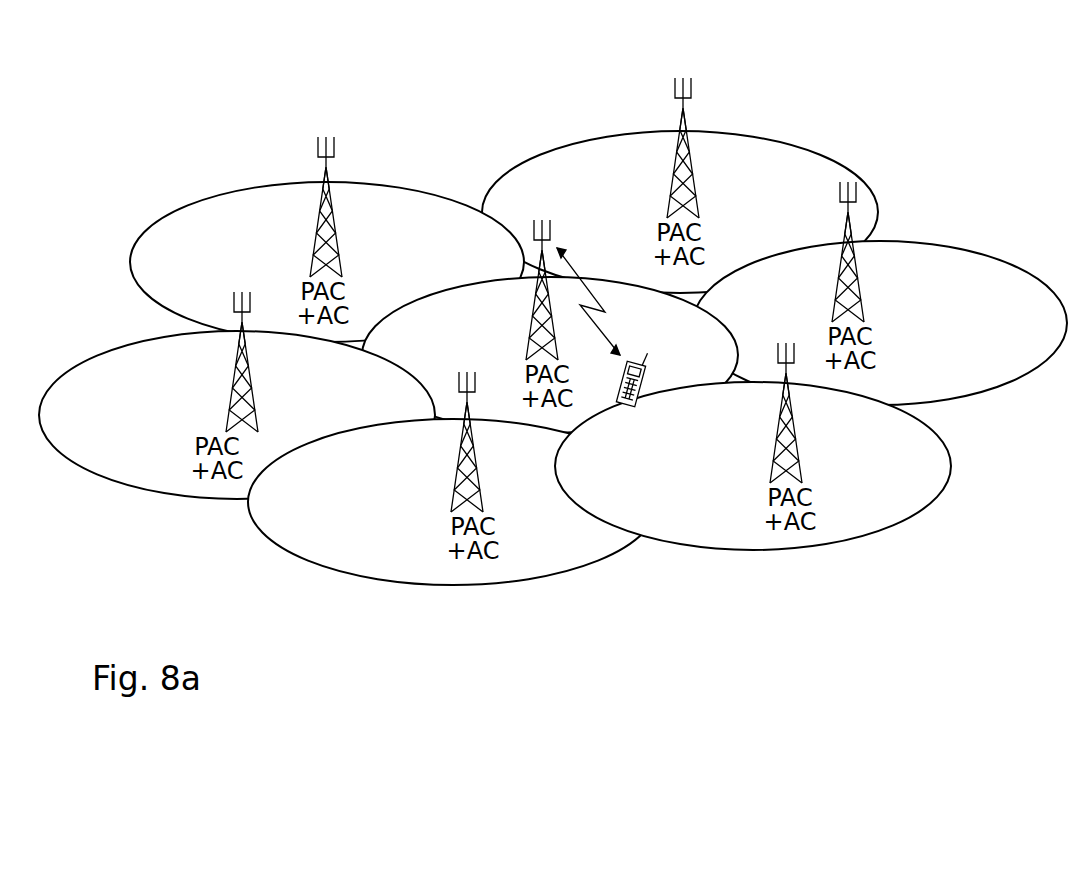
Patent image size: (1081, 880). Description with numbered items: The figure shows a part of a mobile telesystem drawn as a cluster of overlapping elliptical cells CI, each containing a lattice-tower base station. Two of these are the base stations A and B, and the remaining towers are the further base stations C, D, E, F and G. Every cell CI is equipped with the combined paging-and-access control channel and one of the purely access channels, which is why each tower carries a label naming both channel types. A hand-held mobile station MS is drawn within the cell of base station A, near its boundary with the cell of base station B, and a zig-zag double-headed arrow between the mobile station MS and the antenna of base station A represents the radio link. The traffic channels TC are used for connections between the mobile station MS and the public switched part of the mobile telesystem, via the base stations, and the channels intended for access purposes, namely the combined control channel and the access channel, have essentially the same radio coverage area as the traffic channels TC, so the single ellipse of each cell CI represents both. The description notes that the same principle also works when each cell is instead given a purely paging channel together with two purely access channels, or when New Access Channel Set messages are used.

The traffic channel TC is at (576, 266).
The mobile station MS is at (630, 405).
The cell CI is at (853, 503).
The base station A is at (550, 355).
The base station B is at (753, 481).
The base station C is at (880, 323).
The base station D is at (680, 176).
The base station E is at (327, 262).
The base station F is at (237, 415).
The base station G is at (453, 502).